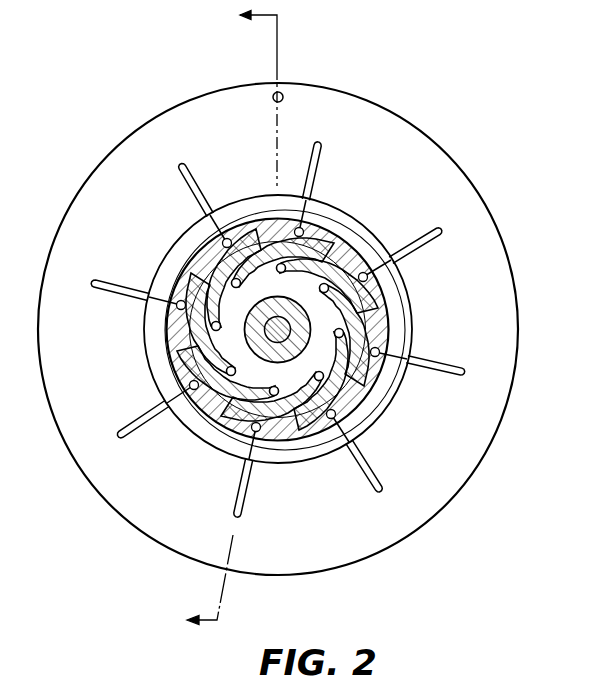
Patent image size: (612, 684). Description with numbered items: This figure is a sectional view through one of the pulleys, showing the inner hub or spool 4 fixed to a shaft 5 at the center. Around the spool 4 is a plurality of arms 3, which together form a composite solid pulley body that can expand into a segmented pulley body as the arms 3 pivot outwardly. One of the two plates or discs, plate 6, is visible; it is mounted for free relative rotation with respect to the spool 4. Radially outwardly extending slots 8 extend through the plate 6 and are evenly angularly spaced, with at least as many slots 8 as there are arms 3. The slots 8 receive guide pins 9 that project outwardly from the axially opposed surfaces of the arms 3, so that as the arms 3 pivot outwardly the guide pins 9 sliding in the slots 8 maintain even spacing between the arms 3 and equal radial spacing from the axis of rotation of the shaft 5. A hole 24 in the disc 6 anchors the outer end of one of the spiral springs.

The arms 3 is at (218, 317).
The spool 4 is at (293, 327).
The shaft 5 is at (268, 320).
The plate 6 is at (403, 200).
The slots 8 is at (323, 145).
The guide pins 9 is at (372, 276).
The hole 24 is at (284, 94).